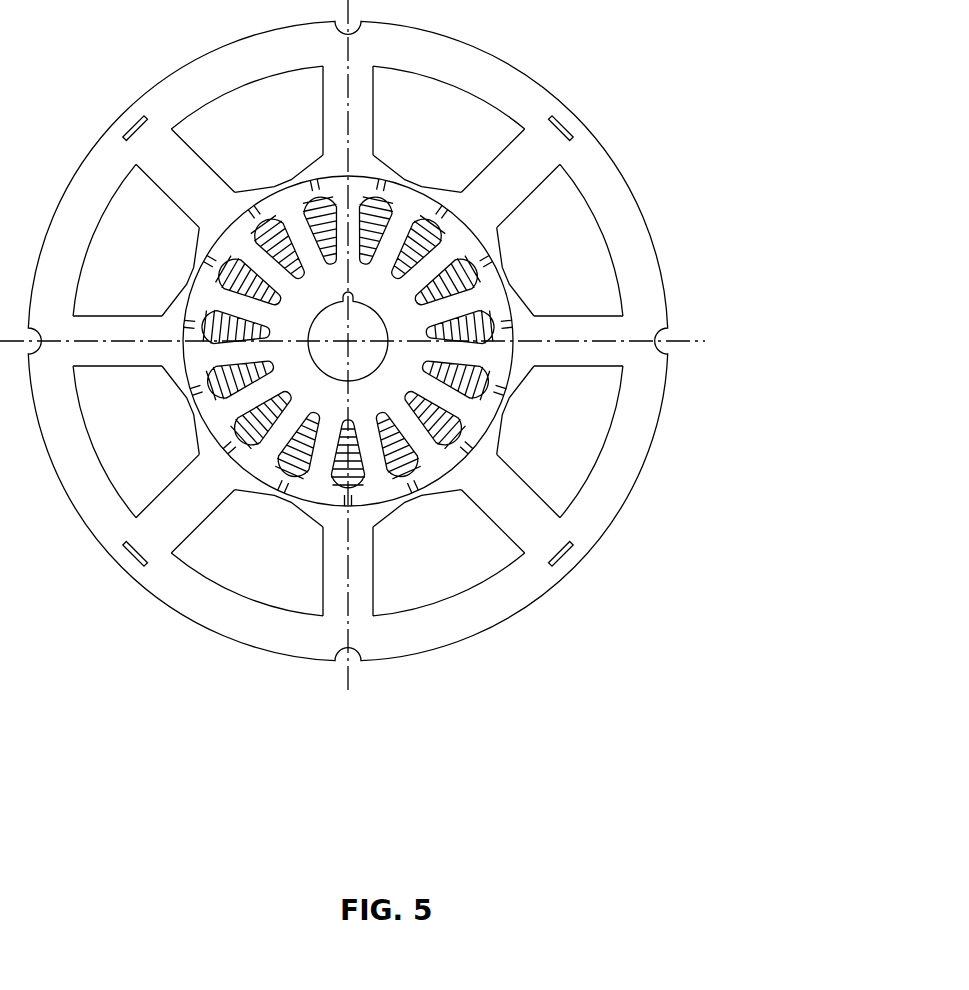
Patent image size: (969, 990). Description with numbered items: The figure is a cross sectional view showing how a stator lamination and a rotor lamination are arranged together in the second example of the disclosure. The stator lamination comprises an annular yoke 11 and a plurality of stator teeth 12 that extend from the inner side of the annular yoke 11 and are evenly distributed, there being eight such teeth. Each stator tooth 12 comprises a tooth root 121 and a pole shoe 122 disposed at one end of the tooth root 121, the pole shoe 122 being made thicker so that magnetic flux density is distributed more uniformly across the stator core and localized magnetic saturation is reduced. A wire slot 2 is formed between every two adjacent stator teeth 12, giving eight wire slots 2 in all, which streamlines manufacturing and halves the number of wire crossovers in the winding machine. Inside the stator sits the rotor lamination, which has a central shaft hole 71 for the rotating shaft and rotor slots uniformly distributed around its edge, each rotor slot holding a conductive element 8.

The wire slot 2 is at (426, 338).
The annular yoke 11 is at (178, 95).
The stator tooth 12 is at (449, 315).
The tooth root 121 is at (510, 203).
The pole shoe 122 is at (450, 196).
The conductive element 8 is at (235, 277).
The shaft hole 71 is at (370, 354).